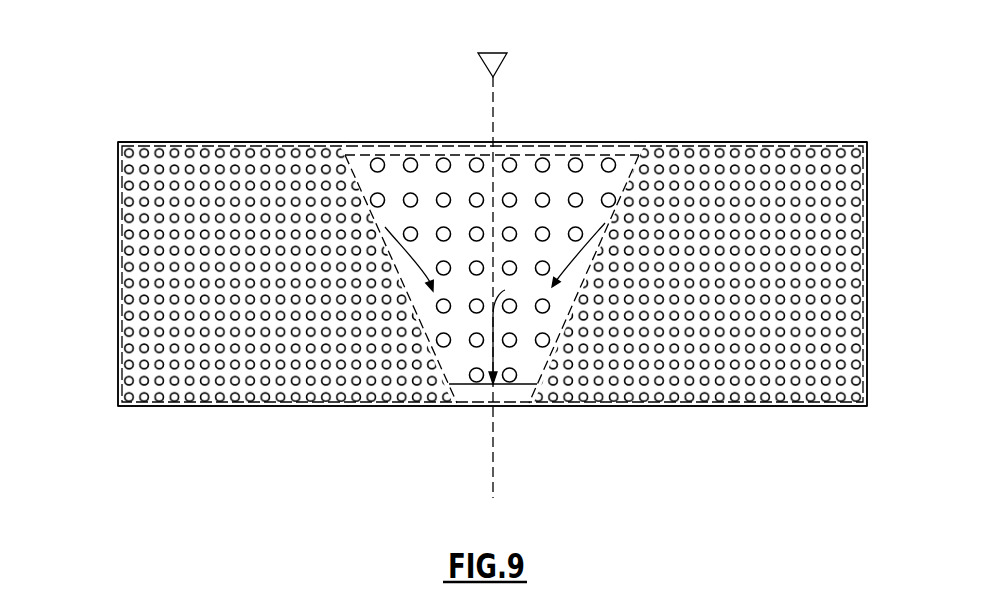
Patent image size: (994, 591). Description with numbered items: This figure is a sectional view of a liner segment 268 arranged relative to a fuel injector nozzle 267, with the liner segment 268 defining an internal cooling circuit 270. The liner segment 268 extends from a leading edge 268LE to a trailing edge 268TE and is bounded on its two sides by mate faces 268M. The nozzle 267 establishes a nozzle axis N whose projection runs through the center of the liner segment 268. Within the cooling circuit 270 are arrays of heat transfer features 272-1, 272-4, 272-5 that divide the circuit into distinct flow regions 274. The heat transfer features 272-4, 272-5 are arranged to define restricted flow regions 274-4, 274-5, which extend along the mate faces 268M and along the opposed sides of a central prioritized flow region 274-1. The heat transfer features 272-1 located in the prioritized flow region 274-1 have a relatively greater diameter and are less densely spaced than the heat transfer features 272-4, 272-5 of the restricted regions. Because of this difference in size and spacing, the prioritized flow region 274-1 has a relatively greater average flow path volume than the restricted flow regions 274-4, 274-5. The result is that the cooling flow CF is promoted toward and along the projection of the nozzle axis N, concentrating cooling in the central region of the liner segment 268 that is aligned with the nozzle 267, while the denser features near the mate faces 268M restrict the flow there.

The liner segment 268 is at (143, 98).
The cooling circuit 270 is at (137, 143).
The flow regions 274 is at (492, 218).
The restricted flow region 274-4 is at (229, 143).
The restricted flow region 274-5 is at (742, 145).
The prioritized flow region 274-1 is at (460, 155).
The heat transfer features 272-4 is at (270, 150).
The heat transfer features 272-5 is at (673, 147).
The heat transfer features 272-1 is at (372, 157).
The fuel injector nozzle 267 is at (497, 50).
The nozzle axis N is at (495, 90).
The leading edge 268LE is at (568, 141).
The trailing edge 268TE is at (507, 408).
The mate faces 268M is at (118, 302).
The cooling flow CF is at (405, 258).